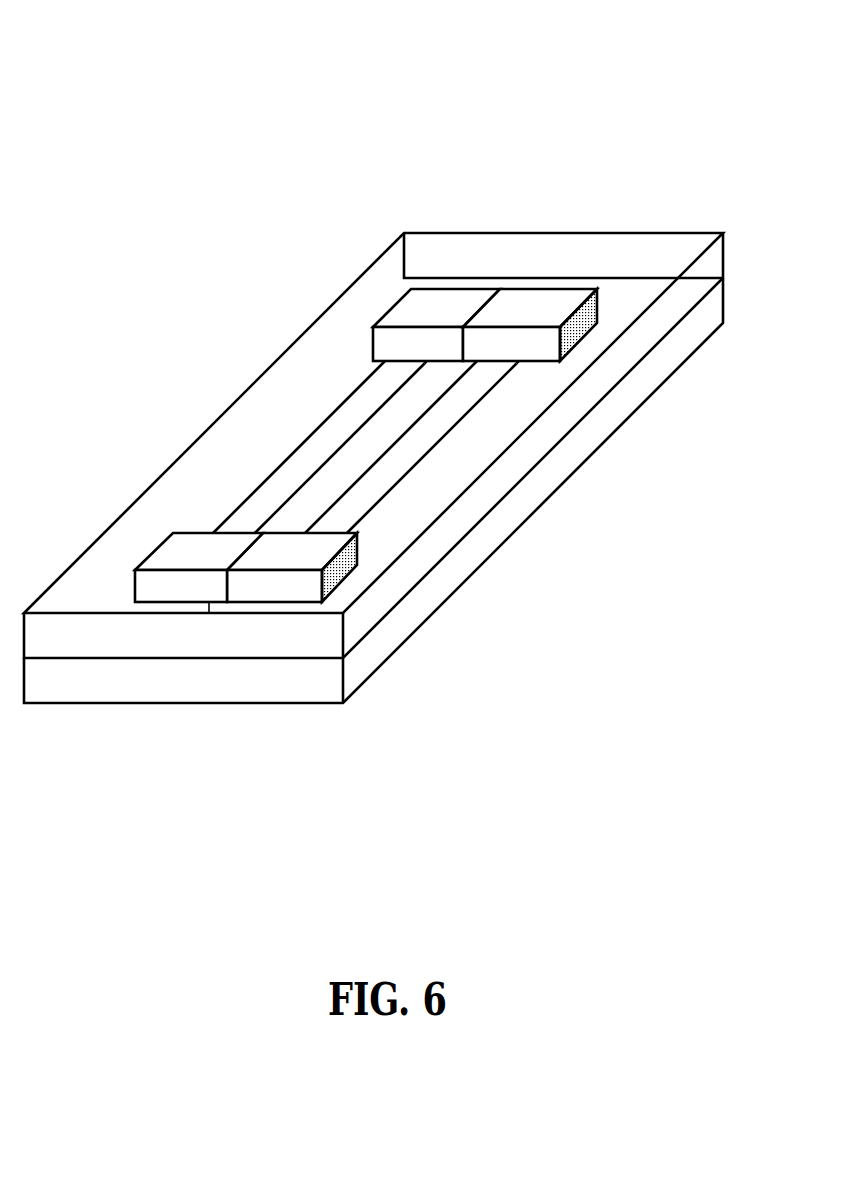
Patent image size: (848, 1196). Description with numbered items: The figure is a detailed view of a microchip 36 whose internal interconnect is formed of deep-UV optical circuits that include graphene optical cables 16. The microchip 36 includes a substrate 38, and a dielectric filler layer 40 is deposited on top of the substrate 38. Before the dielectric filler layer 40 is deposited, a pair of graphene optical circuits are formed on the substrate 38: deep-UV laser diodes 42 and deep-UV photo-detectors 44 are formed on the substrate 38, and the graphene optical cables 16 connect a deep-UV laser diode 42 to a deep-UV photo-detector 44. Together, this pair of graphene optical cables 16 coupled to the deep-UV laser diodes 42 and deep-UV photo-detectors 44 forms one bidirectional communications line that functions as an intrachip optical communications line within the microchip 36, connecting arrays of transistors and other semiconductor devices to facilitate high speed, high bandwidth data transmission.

The microchip 36 is at (378, 426).
The dielectric filler layer 40 is at (479, 229).
The substrate 38 is at (119, 691).
The graphene optical cables 16 is at (292, 473).
The deep-UV laser diodes 42 is at (543, 313).
The deep-UV photo-detectors 44 is at (412, 311).